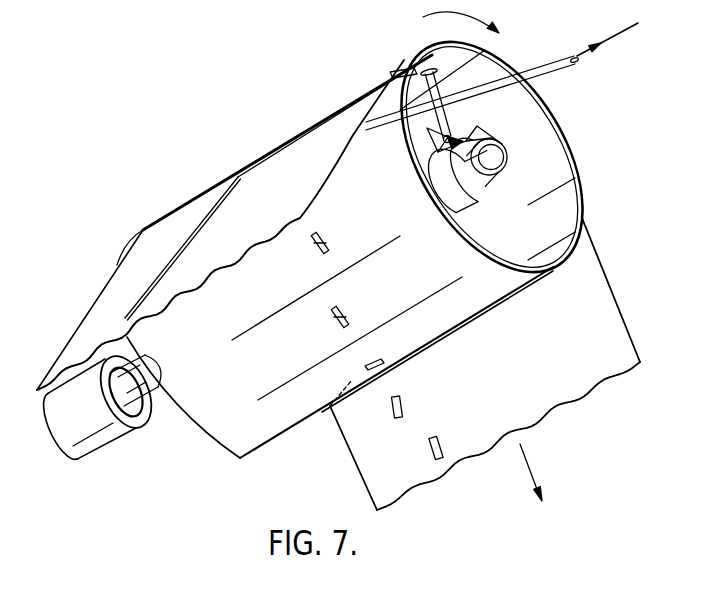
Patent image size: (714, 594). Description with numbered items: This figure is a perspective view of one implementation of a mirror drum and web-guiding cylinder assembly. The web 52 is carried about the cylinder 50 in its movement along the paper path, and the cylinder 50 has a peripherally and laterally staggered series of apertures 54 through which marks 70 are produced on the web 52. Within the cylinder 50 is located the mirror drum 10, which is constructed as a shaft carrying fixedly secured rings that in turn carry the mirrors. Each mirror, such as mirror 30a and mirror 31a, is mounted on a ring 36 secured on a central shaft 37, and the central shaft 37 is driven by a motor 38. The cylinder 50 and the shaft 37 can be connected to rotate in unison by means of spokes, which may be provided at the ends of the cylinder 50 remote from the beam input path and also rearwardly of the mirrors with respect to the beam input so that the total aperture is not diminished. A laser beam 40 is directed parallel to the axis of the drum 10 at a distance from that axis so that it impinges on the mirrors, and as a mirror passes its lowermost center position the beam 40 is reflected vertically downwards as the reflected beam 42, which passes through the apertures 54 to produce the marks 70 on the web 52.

The mirror drum 10 is at (506, 194).
The mirror 30a is at (458, 137).
The mirror 31a is at (433, 148).
The ring 36 is at (480, 203).
The central shaft 37 is at (500, 162).
The motor 38 is at (112, 428).
The laser beam 40 is at (560, 52).
The reflected beam 42 is at (420, 78).
The cylinder 50 is at (580, 181).
The web 52 is at (597, 288).
The apertures 54 is at (403, 72).
The marks 70 is at (402, 402).